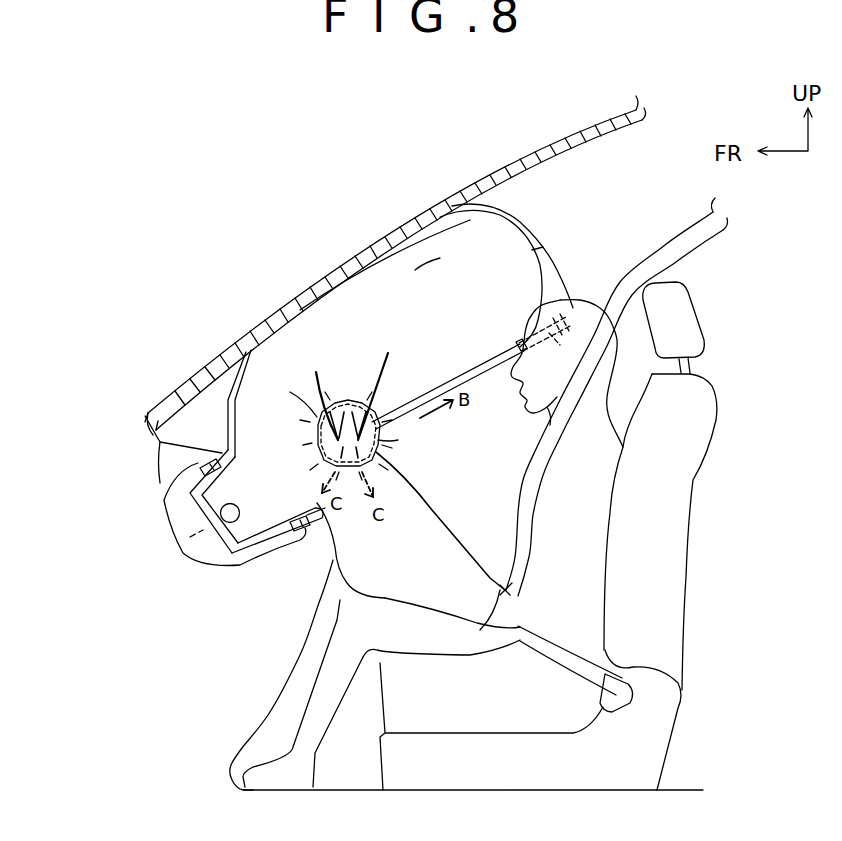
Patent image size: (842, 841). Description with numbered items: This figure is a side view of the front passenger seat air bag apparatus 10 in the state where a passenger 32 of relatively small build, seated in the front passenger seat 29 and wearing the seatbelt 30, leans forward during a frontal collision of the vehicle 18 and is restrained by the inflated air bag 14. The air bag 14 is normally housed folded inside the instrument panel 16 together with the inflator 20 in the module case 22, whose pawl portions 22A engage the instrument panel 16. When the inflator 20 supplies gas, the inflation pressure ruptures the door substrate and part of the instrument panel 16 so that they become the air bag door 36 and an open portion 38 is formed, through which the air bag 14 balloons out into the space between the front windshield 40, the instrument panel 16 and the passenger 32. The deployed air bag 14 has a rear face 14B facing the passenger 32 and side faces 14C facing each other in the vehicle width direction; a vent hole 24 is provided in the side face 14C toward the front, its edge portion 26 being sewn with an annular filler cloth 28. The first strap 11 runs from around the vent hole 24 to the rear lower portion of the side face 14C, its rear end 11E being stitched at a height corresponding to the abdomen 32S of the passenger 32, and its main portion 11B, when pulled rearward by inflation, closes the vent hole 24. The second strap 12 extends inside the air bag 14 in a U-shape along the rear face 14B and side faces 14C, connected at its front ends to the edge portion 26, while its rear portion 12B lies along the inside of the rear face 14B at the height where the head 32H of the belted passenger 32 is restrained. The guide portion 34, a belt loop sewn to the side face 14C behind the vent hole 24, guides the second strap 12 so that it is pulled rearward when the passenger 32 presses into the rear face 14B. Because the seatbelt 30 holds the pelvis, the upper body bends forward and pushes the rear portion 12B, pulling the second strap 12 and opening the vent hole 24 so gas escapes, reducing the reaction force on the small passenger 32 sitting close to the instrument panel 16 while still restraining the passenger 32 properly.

The front passenger seat air bag apparatus 10 is at (635, 203).
The first strap 11 is at (448, 507).
The main portion 11B is at (440, 533).
The rear end 11E is at (457, 613).
The second strap 12 is at (435, 372).
The rear portion 12B is at (515, 347).
The air bag 14 is at (539, 220).
The rear face 14B is at (548, 250).
The side face 14C is at (402, 312).
The instrument panel 16 is at (337, 537).
The vehicle 18 is at (398, 195).
The inflator 20 is at (233, 567).
The module case 22 is at (190, 522).
The pawl portions 22A is at (198, 463).
The vent hole 24 is at (317, 412).
The edge portion 26 is at (347, 410).
The filler cloth 28 is at (400, 442).
The front passenger seat 29 is at (693, 487).
The seatbelt 30 is at (670, 273).
The passenger 32 is at (608, 299).
The head 32H is at (572, 300).
The abdomen 32S is at (515, 527).
The guide portion 34 is at (542, 300).
The air bag door 36 is at (228, 432).
The open portion 38 is at (255, 483).
The front windshield 40 is at (357, 253).